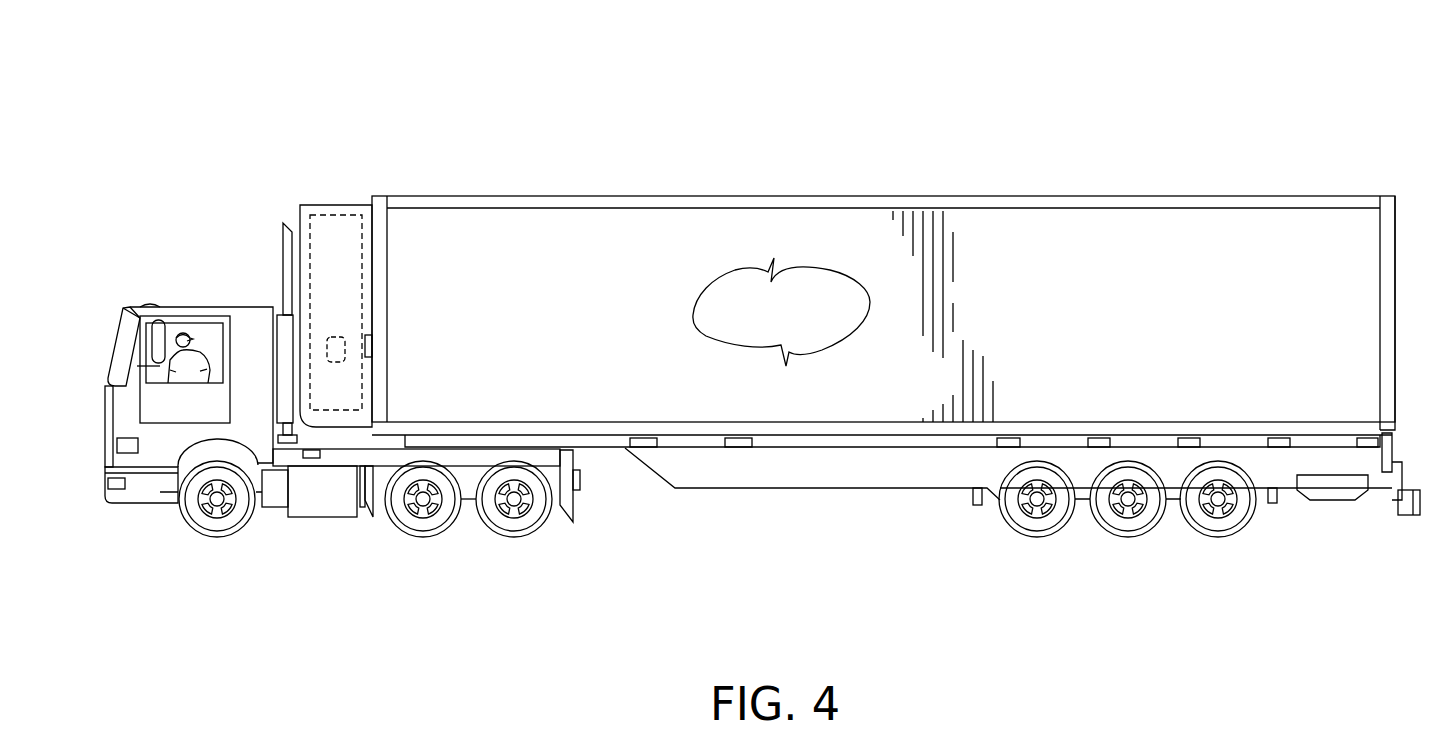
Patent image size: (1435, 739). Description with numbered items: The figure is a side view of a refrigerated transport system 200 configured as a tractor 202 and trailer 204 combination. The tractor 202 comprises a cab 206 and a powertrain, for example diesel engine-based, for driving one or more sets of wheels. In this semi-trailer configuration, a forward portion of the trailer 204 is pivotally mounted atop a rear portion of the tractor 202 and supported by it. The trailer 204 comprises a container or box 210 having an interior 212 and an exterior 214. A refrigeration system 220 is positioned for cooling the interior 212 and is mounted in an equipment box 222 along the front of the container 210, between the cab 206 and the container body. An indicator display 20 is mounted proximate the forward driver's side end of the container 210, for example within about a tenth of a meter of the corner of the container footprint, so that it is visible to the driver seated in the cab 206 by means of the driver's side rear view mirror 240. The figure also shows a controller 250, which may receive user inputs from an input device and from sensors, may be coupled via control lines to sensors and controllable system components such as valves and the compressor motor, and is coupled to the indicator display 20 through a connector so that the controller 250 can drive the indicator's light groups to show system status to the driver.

The refrigerated transport system 200 is at (1029, 92).
The tractor 202 is at (286, 567).
The trailer 204 is at (1044, 591).
The cab 206 is at (250, 315).
The container 210 is at (786, 228).
The interior 212 is at (786, 317).
The exterior 214 is at (1095, 242).
The refrigeration system 220 is at (338, 215).
The equipment box 222 is at (310, 208).
The driver's side rear view mirror 240 is at (150, 338).
The controller 250 is at (340, 358).
The indicator display 20 is at (372, 346).